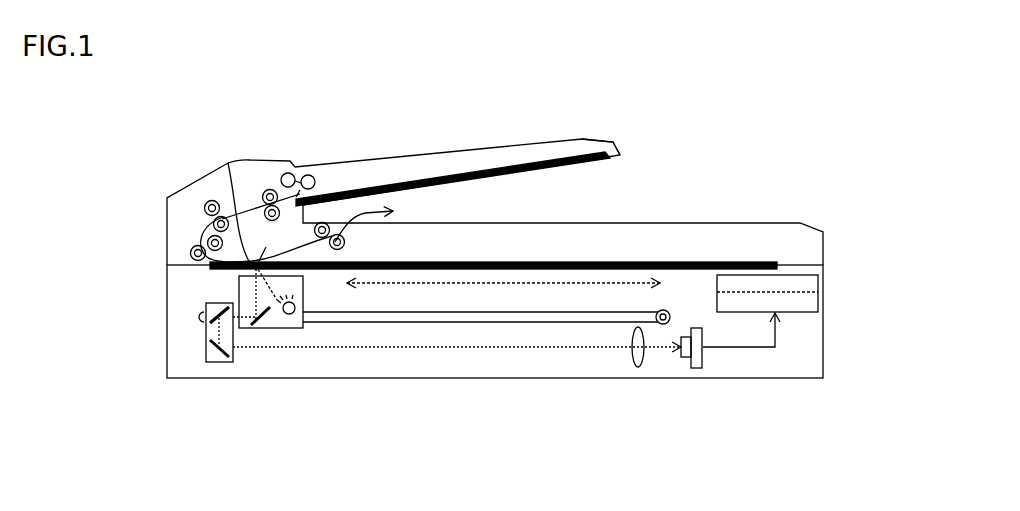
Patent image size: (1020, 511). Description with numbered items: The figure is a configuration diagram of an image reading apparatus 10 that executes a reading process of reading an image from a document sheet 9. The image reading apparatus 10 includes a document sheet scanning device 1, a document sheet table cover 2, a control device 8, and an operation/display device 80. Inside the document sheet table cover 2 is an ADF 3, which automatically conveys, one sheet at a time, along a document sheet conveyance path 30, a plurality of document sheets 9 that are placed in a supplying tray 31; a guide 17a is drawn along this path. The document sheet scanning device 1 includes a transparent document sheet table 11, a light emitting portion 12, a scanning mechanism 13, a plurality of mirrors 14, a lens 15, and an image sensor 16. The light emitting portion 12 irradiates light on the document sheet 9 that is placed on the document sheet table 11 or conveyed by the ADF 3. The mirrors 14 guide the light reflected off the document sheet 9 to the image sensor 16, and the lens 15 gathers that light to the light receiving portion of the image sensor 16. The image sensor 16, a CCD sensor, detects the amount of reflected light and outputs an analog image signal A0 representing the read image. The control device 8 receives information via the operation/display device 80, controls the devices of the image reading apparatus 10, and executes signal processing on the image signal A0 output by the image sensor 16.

The document sheet scanning device 1 is at (175, 305).
The document sheet table cover 2 is at (167, 243).
The ADF (Automatic Document Feeder) 3 is at (173, 218).
The document sheet conveyance path 30 is at (203, 221).
The document guide 17a is at (228, 167).
The document sheet 9 is at (480, 165).
The supplying tray 31 is at (620, 141).
The image reading apparatus 10 is at (838, 153).
The transparent document sheet table 11 is at (667, 269).
The light emitting portion 12 is at (303, 309).
The scanning mechanism 13 is at (445, 312).
The mirrors 14 is at (263, 318).
The lens 15 is at (634, 368).
The image sensor 16 is at (697, 368).
The control device 8 is at (818, 300).
The operation/display device 80 is at (818, 283).
The image signal A0 is at (754, 336).